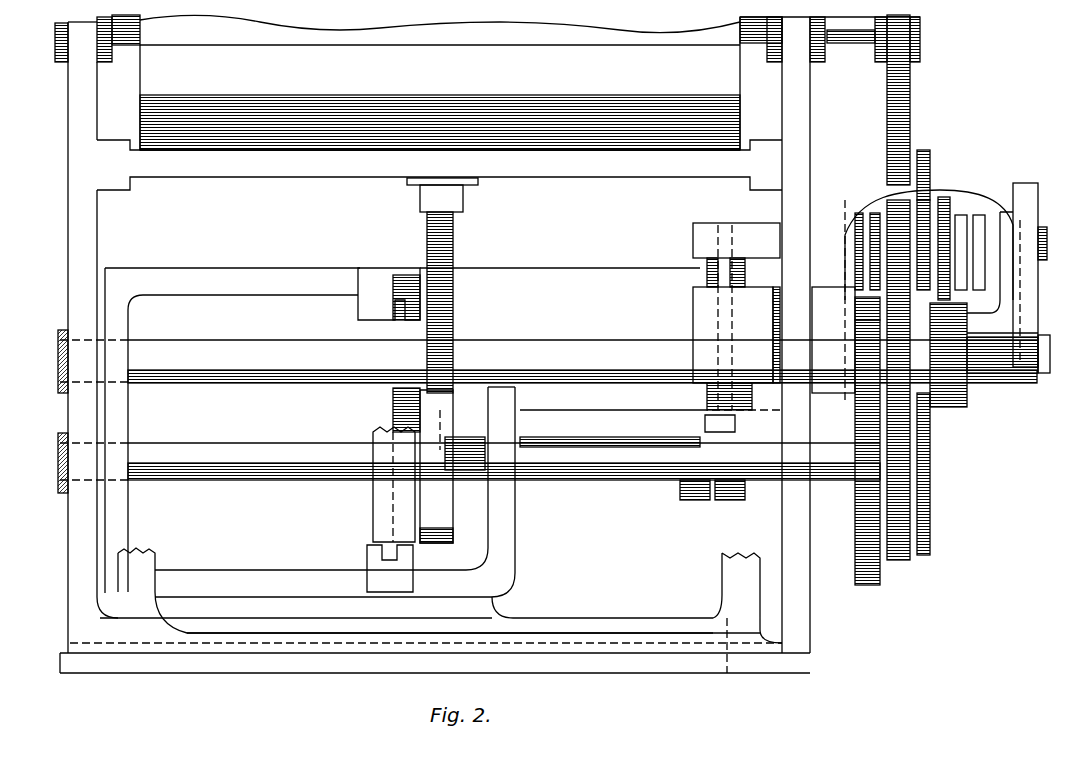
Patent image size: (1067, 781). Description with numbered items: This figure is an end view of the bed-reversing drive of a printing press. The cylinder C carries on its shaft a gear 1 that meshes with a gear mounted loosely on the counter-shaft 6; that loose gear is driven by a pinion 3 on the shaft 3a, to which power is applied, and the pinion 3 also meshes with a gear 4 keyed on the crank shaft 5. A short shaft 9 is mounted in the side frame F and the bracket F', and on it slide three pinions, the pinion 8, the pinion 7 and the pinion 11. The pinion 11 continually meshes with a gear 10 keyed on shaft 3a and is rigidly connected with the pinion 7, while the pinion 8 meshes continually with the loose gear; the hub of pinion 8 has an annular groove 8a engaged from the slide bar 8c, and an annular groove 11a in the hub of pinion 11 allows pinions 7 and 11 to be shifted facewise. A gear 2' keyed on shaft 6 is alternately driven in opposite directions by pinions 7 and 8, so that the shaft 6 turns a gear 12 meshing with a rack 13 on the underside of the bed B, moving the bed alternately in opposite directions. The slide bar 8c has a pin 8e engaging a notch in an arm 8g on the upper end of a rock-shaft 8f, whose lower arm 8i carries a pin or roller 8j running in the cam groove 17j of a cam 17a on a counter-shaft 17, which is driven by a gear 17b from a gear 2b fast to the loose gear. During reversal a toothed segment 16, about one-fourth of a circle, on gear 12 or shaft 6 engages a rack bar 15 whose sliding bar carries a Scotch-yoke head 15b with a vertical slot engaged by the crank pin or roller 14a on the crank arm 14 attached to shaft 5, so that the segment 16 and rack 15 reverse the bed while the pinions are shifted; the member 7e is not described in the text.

The gear 1 is at (910, 95).
The gear 2' is at (930, 160).
The gear 2b is at (855, 303).
The pinion 3 is at (1007, 300).
The shaft 3a is at (1042, 382).
The gear 4 is at (925, 540).
The crank shaft 5 is at (594, 420).
The counter-shaft 6 is at (262, 352).
The pinion 7 is at (926, 200).
The bearing 7e is at (720, 429).
The pinion 8 is at (890, 205).
The annular groove 8a is at (860, 215).
The bar 8c is at (730, 228).
The pin 8e is at (712, 268).
The rock-shaft 8f is at (720, 305).
The arm 8g is at (695, 273).
The arm 8i is at (705, 395).
The pin or roller 8j is at (698, 420).
The short shaft 9 is at (992, 240).
The gear 10 is at (975, 398).
The pinion 11 is at (946, 205).
The annular groove 11a is at (968, 225).
The gear 12 is at (455, 260).
The rack 13 is at (462, 212).
The crank arm 14 is at (437, 494).
The crank pin or roller 14a is at (372, 523).
The rack bar 15 is at (413, 466).
The Scotch-yoke head 15b is at (372, 500).
The toothed segment 16 is at (392, 403).
The counter-shaft 17 is at (250, 452).
The cam 17a is at (672, 505).
The gear 17b is at (878, 582).
The cam groove 17j is at (708, 510).
The bed B is at (270, 170).
The cylinder C is at (370, 46).
The side frame F is at (81, 334).
The bracket F' is at (902, 414).